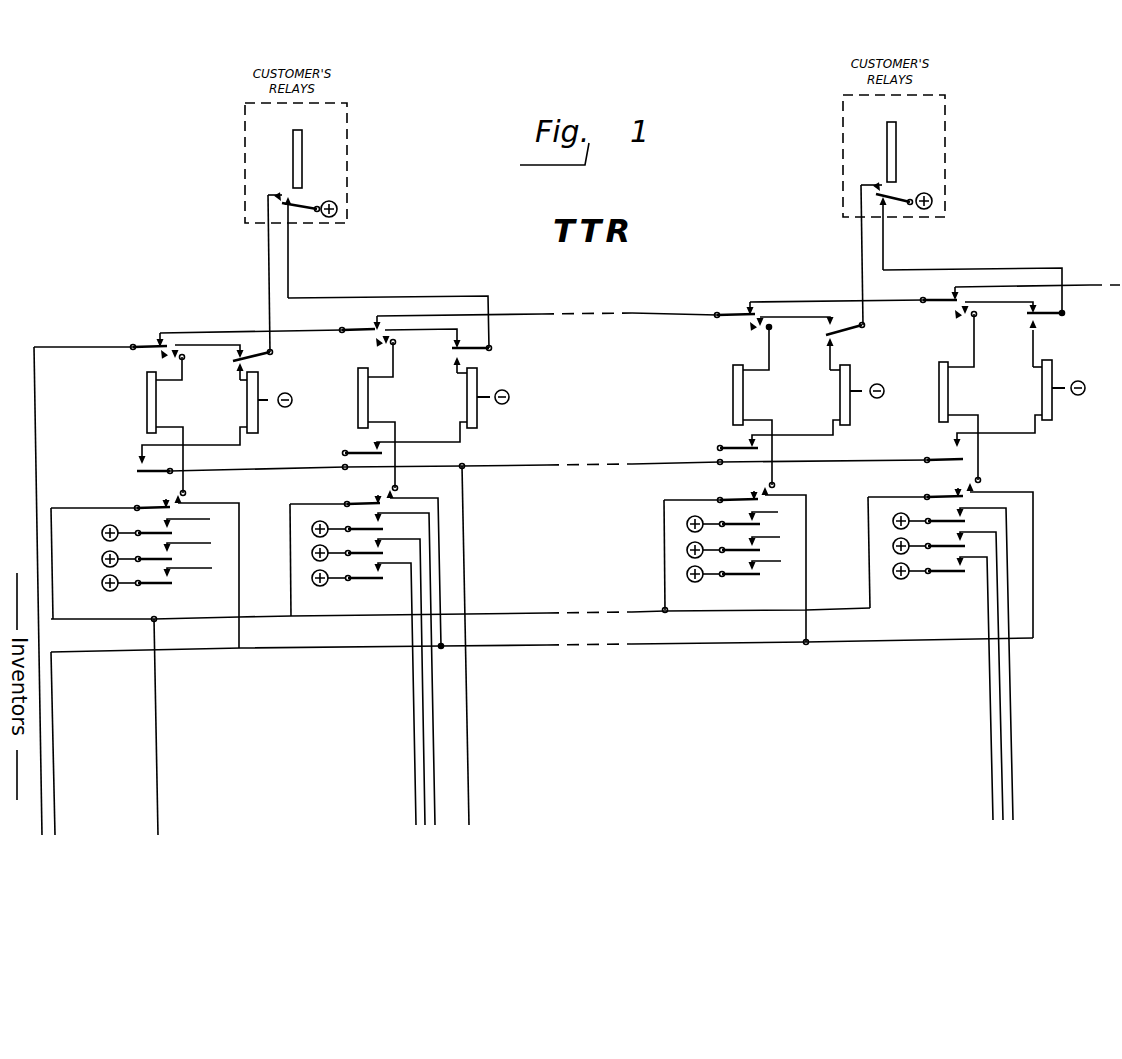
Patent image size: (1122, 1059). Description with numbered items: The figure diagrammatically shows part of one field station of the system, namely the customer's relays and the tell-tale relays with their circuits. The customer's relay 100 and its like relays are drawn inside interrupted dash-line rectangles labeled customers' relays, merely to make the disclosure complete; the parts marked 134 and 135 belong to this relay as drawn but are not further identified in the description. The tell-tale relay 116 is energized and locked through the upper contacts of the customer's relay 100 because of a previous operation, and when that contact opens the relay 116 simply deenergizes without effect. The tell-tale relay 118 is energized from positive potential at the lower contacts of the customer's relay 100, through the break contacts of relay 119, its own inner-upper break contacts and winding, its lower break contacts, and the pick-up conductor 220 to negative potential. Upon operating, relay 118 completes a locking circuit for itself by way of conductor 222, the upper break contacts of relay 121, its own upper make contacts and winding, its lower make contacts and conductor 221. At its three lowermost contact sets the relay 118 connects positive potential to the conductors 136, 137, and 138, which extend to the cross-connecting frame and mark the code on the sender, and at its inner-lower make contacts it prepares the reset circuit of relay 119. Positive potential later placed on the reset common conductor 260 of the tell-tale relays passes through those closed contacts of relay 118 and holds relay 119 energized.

The customer's relay 100 is at (280, 159).
The relay armature 134 is at (290, 211).
The relay contact 135 is at (297, 204).
The tell-tale relay 116 is at (247, 400).
The tell-tale relay 118 is at (358, 397).
The relay 119 is at (467, 390).
The relay 121 is at (147, 403).
The conductor 136 is at (427, 756).
The conductor 137 is at (418, 783).
The conductor 138 is at (418, 810).
The reset common conductor 260 is at (469, 778).
The pick-up conductor 220 is at (55, 815).
The conductor 221 is at (158, 797).
The conductor 222 is at (42, 793).